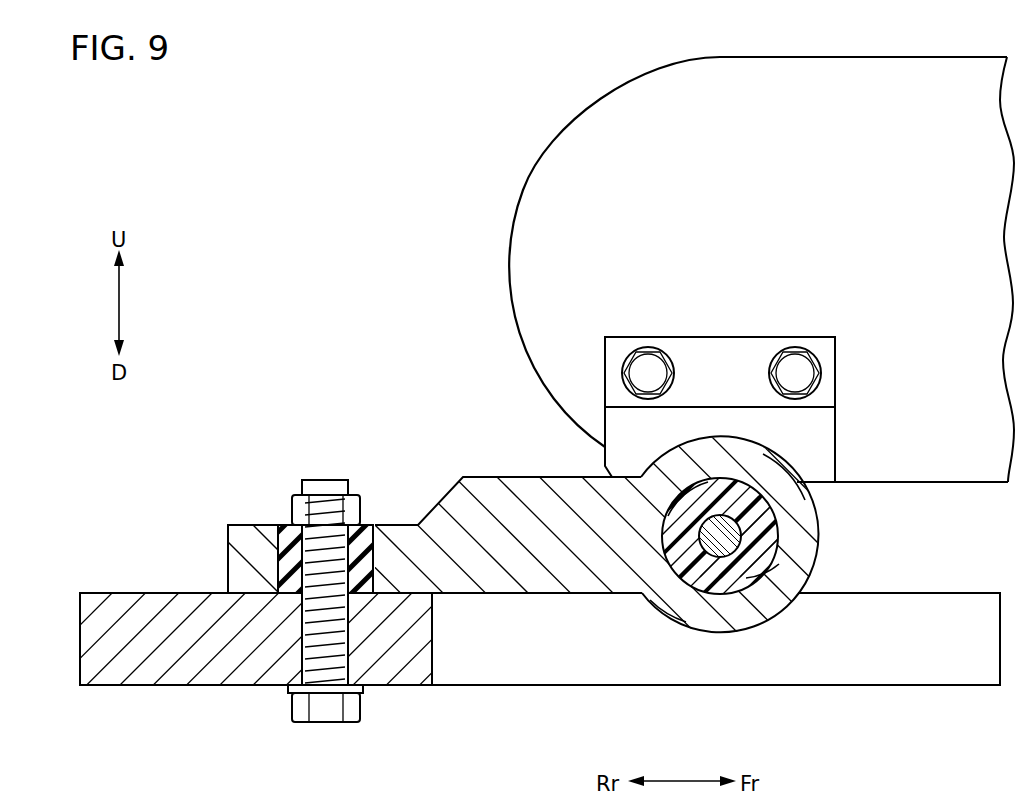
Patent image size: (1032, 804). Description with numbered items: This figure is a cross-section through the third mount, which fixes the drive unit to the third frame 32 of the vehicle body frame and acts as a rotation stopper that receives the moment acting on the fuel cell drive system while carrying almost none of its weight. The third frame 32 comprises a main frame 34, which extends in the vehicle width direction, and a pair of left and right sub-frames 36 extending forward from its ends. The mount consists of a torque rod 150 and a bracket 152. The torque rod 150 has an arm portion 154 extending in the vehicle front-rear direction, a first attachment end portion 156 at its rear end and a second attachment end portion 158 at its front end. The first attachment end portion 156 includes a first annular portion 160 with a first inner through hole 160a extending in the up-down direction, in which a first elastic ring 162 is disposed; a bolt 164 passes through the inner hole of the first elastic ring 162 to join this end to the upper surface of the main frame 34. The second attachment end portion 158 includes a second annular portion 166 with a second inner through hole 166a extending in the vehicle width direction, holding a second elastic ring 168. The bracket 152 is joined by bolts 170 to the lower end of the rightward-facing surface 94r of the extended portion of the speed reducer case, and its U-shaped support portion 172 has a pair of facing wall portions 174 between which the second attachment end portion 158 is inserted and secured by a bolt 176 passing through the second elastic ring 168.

The surface of the extended portion 94r is at (537, 249).
The bracket 152 is at (775, 390).
The wall portions 174 is at (820, 432).
The support portion 172 is at (822, 472).
The bolts 170 is at (648, 365).
The torque rod 150 is at (555, 561).
The arm portion 154 is at (533, 495).
The second attachment end portion 158 is at (755, 561).
The second annular portion 166 is at (769, 555).
The second inner through hole 166a is at (765, 585).
The second elastic ring 168 is at (767, 532).
The bolt 176 is at (720, 545).
The first attachment end portion 156 is at (271, 534).
The first elastic ring 162 is at (227, 537).
The first annular portion 160 is at (297, 532).
The first inner through hole 160a is at (363, 540).
The bolt 164 is at (327, 711).
The third frame 32 is at (500, 680).
The main frame 34 is at (92, 636).
The sub-frames 36 is at (890, 677).